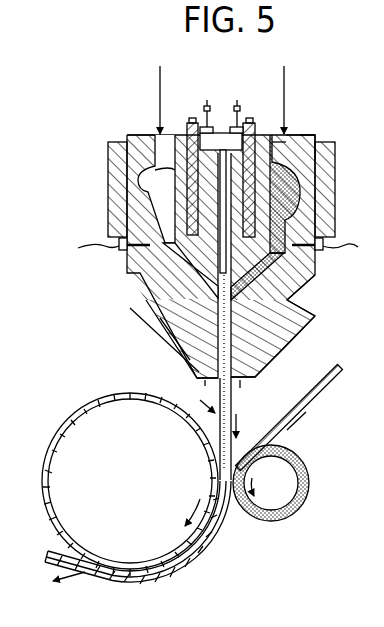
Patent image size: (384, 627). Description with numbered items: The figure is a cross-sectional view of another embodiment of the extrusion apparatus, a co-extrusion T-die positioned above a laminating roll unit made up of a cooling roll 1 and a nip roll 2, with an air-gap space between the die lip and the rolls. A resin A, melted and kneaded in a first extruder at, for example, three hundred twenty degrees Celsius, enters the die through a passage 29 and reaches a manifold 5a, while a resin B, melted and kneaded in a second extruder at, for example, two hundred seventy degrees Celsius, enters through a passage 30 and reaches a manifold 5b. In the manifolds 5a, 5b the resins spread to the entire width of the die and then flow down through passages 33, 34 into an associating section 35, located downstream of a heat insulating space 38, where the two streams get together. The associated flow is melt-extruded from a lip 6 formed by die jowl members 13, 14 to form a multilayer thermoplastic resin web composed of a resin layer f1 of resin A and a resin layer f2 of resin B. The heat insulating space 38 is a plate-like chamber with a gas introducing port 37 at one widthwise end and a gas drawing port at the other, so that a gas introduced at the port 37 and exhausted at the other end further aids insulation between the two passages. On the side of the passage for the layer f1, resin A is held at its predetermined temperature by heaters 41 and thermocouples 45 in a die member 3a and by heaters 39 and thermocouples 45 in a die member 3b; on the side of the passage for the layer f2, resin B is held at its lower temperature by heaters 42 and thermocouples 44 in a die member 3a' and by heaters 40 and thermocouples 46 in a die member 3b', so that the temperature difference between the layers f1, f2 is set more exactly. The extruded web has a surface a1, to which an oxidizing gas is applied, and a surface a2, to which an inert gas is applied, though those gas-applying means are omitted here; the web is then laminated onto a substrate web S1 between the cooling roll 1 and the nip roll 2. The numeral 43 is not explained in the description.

The cooling roll 1 is at (66, 425).
The nip roll 2 is at (298, 514).
The die member 3a is at (311, 111).
The die member 3a' is at (130, 108).
The die member 3b is at (260, 162).
The die member 3b' is at (182, 158).
The manifold 5a is at (300, 225).
The manifold 5b is at (155, 195).
The lip 6 is at (232, 385).
The die jowl member 13 is at (280, 345).
The die jowl member 14 is at (178, 348).
The passage 29 is at (322, 148).
The passage 30 is at (127, 152).
The passage 33 is at (300, 323).
The passage 34 is at (150, 303).
The associating section 35 is at (172, 320).
The gas introducing port 37 is at (238, 127).
The heat insulating space 38 is at (305, 303).
The heaters 39 is at (305, 278).
The heaters 40 is at (160, 268).
The heaters 41 is at (330, 205).
The heaters 42 is at (108, 222).
The bolt 43 is at (328, 250).
The thermocouples 44 is at (119, 250).
The thermocouples 45 is at (286, 178).
The thermocouples 46 is at (150, 182).
The resin layer f1 is at (233, 390).
The resin layer f2 is at (212, 386).
The surface of the as-extruded molten web a1 is at (235, 411).
The surface of the as-extruded molten web a2 is at (198, 399).
The substrate web S1 is at (333, 374).
The resin A is at (283, 89).
The resin B is at (159, 89).